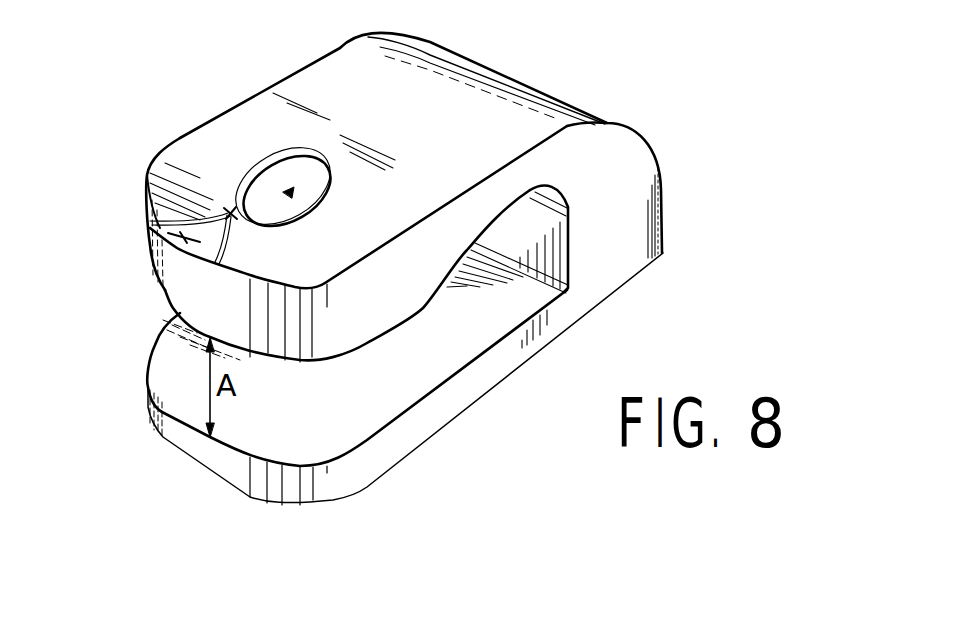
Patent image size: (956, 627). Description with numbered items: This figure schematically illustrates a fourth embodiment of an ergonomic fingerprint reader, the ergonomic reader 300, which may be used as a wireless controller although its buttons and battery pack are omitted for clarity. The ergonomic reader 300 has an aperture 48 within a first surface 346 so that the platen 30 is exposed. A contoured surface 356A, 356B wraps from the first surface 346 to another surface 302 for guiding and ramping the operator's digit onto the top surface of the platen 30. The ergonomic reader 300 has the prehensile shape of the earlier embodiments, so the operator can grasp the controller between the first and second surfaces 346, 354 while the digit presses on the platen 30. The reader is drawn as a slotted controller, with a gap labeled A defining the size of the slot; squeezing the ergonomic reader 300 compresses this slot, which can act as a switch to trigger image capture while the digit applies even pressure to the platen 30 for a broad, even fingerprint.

The ergonomic reader 300 is at (422, 302).
The another surface 302 is at (185, 285).
The second surface 354 is at (385, 450).
The first surface 346 is at (375, 237).
The aperture 48 is at (290, 157).
The platen 30 is at (285, 196).
The contoured surface 356A is at (222, 212).
The contoured surface 356B is at (168, 232).